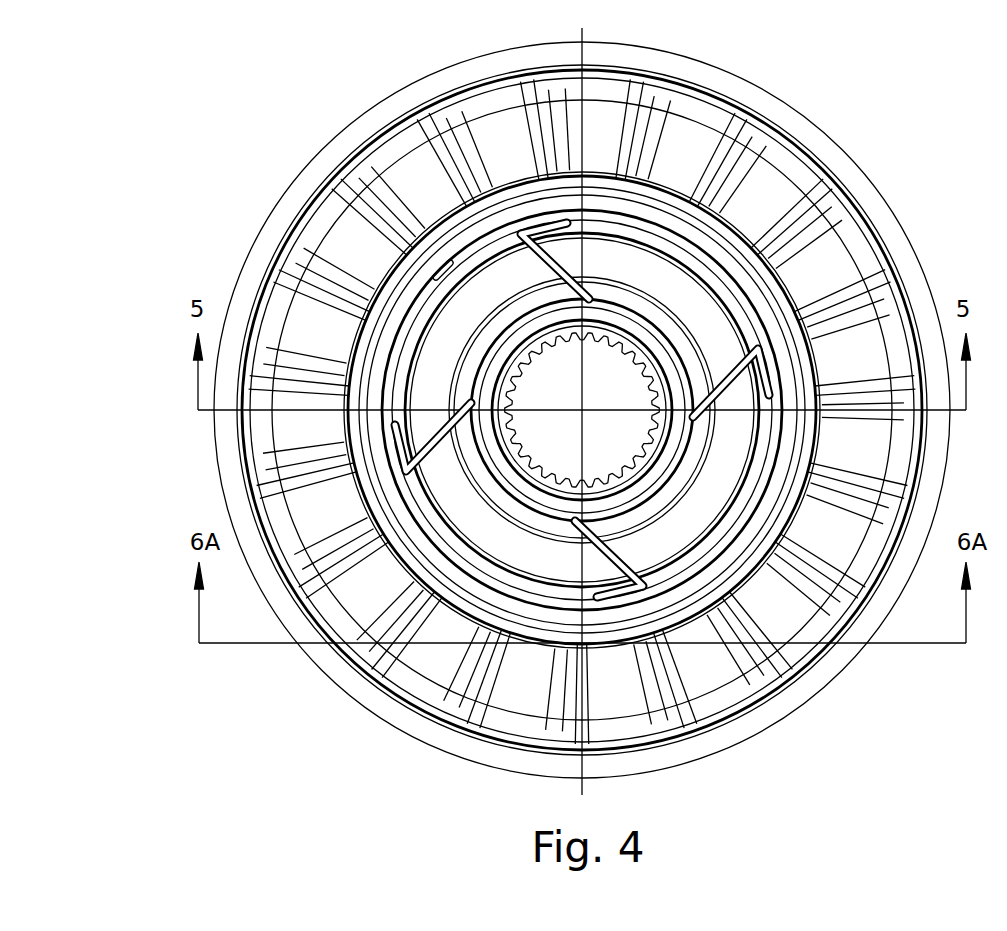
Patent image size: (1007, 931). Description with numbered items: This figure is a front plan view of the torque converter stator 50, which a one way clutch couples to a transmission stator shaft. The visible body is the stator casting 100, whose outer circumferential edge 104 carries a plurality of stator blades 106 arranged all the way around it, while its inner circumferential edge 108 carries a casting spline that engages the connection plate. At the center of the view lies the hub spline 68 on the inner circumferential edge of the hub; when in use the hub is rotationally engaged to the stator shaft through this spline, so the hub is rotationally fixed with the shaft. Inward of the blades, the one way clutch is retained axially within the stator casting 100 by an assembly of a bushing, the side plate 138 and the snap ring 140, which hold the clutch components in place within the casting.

The torque converter stator 50 is at (197, 90).
The stator casting 100 is at (343, 122).
The outer circumferential edge 104 is at (240, 273).
The stator blades 106 is at (343, 255).
The inner circumferential edge 108 is at (698, 97).
The hub spline 68 is at (640, 355).
The side plate 138 is at (480, 522).
The snap ring 140 is at (503, 600).